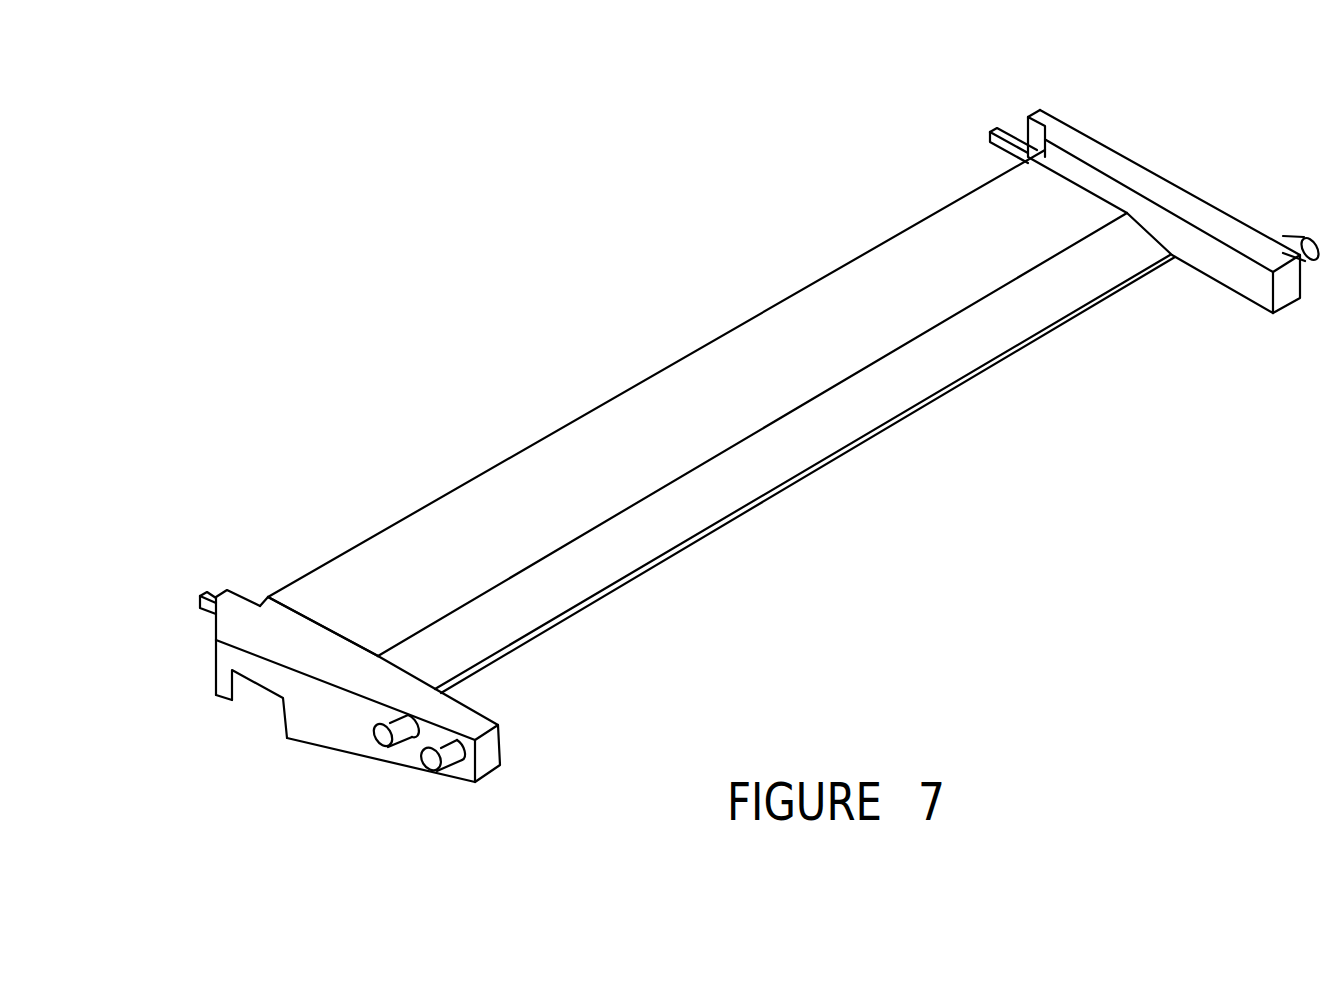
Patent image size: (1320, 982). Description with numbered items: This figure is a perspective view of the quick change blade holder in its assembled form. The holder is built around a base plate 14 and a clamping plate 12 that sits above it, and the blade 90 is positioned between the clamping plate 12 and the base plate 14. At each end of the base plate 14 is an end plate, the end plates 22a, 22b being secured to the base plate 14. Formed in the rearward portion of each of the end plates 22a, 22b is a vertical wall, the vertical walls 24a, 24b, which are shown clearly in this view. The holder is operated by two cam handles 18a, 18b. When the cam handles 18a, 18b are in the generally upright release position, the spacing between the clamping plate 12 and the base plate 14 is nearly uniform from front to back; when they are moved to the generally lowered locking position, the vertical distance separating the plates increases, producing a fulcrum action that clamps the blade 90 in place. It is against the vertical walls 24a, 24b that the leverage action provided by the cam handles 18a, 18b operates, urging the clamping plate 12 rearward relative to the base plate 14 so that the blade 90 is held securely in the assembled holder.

The clamping plate 12 is at (585, 412).
The base plate 14 is at (263, 692).
The cam handle 18a is at (206, 592).
The cam handle 18b is at (981, 136).
The end plate 22a is at (361, 699).
The end plate 22b is at (1146, 168).
The vertical wall 24a is at (260, 600).
The vertical wall 24b is at (1028, 117).
The blade 90 is at (695, 538).